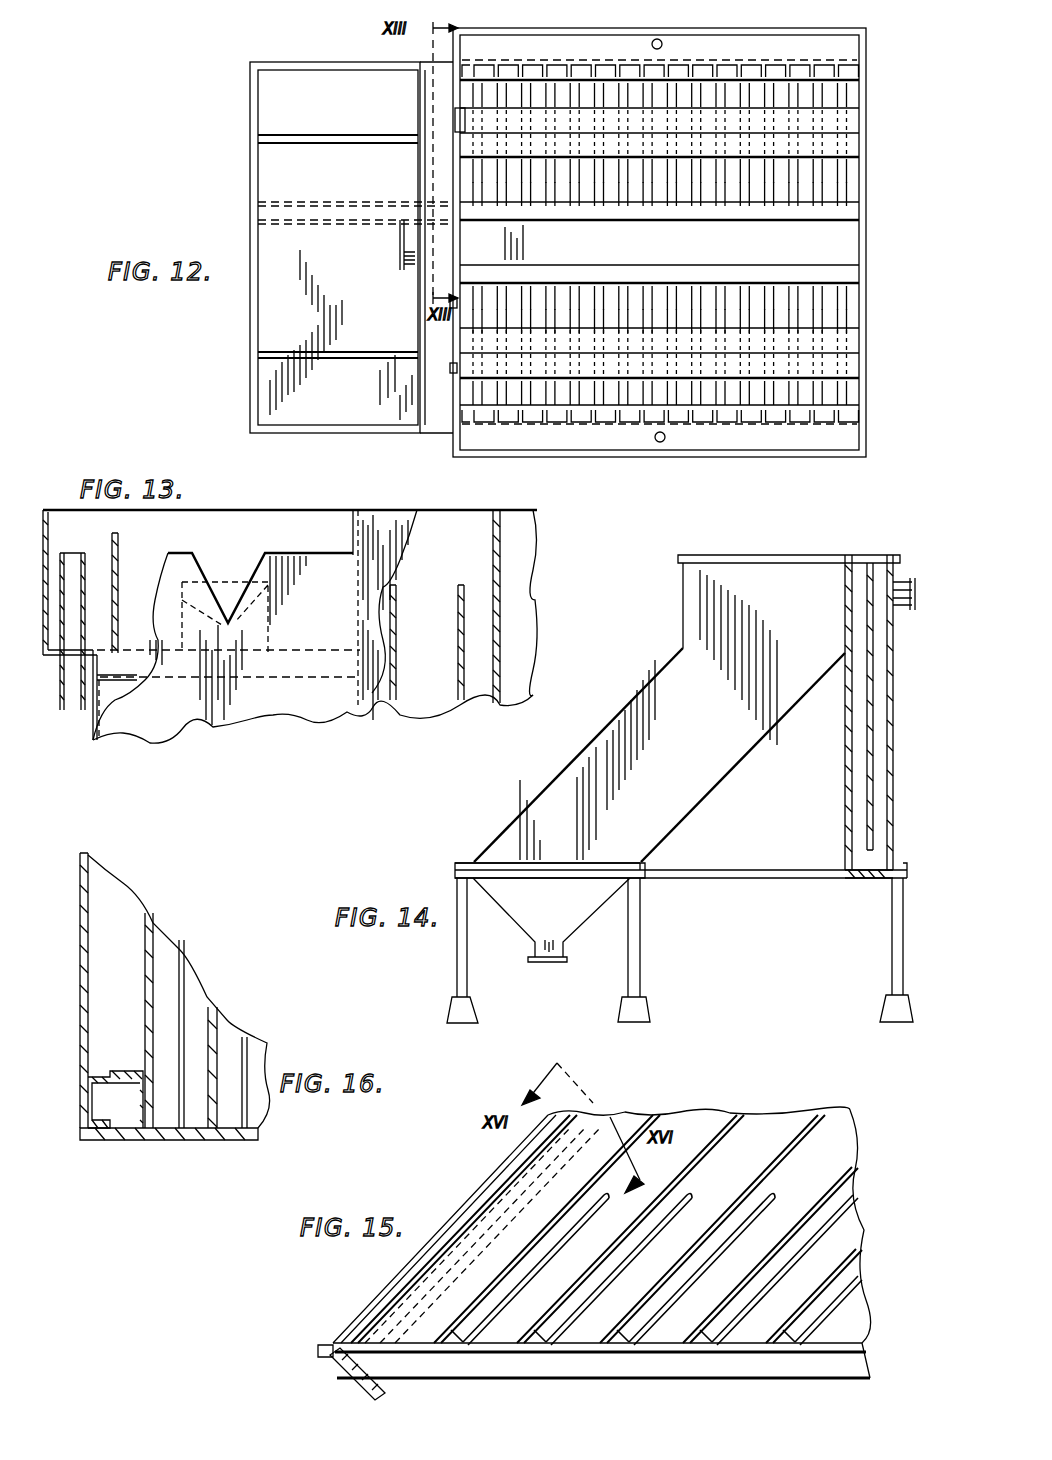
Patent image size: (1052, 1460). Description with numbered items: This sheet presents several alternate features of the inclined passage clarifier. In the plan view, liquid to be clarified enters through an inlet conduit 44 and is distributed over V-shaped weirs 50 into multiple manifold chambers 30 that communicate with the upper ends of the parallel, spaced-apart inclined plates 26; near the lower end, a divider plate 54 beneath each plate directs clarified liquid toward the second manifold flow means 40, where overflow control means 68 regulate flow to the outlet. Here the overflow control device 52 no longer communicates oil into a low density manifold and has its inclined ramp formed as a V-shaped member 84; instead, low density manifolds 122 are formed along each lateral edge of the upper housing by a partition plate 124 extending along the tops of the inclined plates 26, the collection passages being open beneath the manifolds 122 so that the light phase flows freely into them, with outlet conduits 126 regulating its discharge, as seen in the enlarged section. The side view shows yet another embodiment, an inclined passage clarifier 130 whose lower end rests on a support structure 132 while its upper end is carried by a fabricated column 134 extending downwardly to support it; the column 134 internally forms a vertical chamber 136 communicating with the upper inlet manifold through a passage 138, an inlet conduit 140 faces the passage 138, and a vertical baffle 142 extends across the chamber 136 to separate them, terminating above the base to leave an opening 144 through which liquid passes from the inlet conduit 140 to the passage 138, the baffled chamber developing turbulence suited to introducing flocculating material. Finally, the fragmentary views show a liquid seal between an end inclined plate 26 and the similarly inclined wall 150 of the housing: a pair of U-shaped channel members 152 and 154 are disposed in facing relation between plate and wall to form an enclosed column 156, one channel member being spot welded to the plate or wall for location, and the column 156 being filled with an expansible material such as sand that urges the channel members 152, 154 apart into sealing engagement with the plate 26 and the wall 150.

In FIG. 16, the inclined plates 26 is at (152, 945).
In FIG. 15, the inclined plates 26 is at (665, 1117).
In FIG. 12, the manifold chambers 30 is at (840, 170).
In FIG. 13, the manifold chambers 30 is at (284, 533).
In FIG. 13, the second manifold flow means 40 is at (444, 546).
In FIG. 12, the inlet conduit 44 is at (396, 248).
In FIG. 12, the V-shaped weirs 50 is at (455, 120).
In FIG. 13, the V-shaped weirs 50 is at (193, 562).
In FIG. 12, the overflow control device 52 is at (660, 325).
In FIG. 13, the overflow control device 52 is at (272, 619).
In FIG. 16, the divider plate 54 is at (185, 965).
In FIG. 15, the divider plate 54 is at (690, 1215).
In FIG. 12, the overflow control means 68 is at (605, 222).
In FIG. 13, the overflow control means 68 is at (457, 620).
In FIG. 12, the V-shaped member 84 is at (688, 150).
In FIG. 13, the V-shaped member 84 is at (165, 605).
In FIG. 12, the low density manifolds 122 is at (848, 40).
In FIG. 13, the low density manifolds 122 is at (58, 513).
In FIG. 12, the partition plate 124 is at (850, 86).
In FIG. 13, the partition plate 124 is at (116, 545).
In FIG. 12, the outlet conduits 126 is at (663, 44).
In FIG. 13, the outlet conduits 126 is at (73, 562).
In FIG. 14, the inclined passage clarifier 130 is at (690, 760).
In FIG. 14, the support structure 132 is at (450, 865).
In FIG. 14, the fabricated column 134 is at (893, 695).
In FIG. 14, the vertical chamber 136 is at (878, 640).
In FIG. 14, the passage 138 is at (840, 590).
In FIG. 14, the inlet conduit 140 is at (913, 592).
In FIG. 14, the vertical baffle 142 is at (873, 740).
In FIG. 14, the opening 144 is at (875, 853).
In FIG. 16, the inclined wall 150 is at (80, 865).
In FIG. 15, the inclined wall 150 is at (498, 1168).
In FIG. 16, the channel member 152 is at (95, 1098).
In FIG. 15, the channel member 152 is at (390, 1300).
In FIG. 16, the channel member 154 is at (130, 1070).
In FIG. 15, the channel member 154 is at (430, 1283).
In FIG. 16, the enclosed column 156 is at (128, 1100).